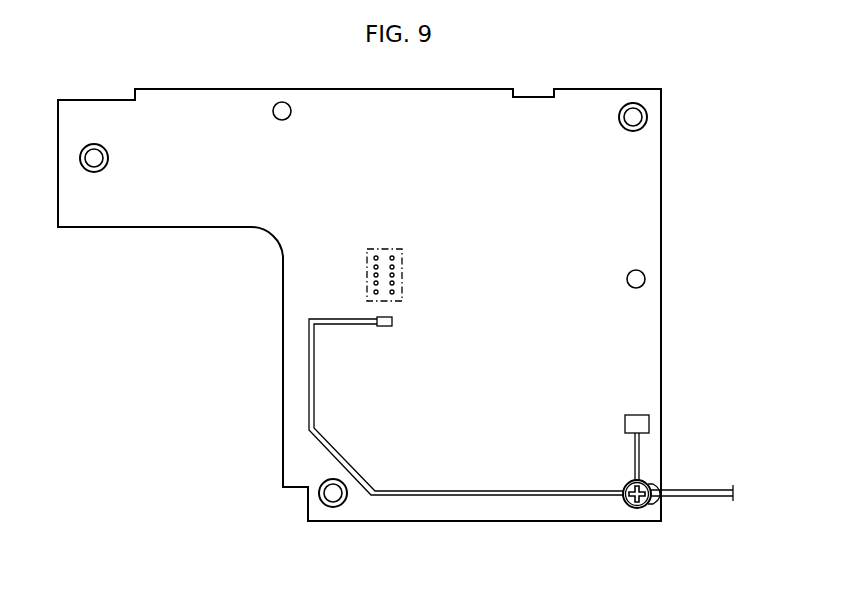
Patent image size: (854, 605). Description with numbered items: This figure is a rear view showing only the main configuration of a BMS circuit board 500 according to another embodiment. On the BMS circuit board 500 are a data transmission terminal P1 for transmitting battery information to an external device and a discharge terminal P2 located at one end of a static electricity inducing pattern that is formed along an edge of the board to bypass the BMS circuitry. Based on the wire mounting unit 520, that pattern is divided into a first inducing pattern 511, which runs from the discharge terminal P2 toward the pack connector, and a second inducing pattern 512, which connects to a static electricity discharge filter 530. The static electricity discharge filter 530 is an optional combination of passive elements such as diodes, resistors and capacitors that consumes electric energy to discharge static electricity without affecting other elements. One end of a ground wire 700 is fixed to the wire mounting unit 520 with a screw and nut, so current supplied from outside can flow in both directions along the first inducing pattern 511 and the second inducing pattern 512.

The BMS circuit board 500 is at (640, 198).
The data transmission terminal P1 is at (402, 271).
The discharge terminal P2 is at (392, 321).
The first inducing pattern 511 is at (505, 495).
The second inducing pattern 512 is at (638, 458).
The wire mounting unit 520 is at (637, 506).
The static electricity discharge filter 530 is at (640, 425).
The ground wire 700 is at (710, 497).